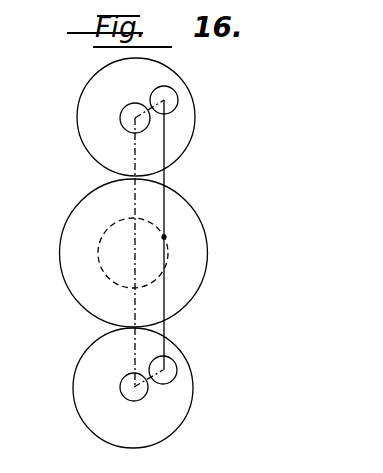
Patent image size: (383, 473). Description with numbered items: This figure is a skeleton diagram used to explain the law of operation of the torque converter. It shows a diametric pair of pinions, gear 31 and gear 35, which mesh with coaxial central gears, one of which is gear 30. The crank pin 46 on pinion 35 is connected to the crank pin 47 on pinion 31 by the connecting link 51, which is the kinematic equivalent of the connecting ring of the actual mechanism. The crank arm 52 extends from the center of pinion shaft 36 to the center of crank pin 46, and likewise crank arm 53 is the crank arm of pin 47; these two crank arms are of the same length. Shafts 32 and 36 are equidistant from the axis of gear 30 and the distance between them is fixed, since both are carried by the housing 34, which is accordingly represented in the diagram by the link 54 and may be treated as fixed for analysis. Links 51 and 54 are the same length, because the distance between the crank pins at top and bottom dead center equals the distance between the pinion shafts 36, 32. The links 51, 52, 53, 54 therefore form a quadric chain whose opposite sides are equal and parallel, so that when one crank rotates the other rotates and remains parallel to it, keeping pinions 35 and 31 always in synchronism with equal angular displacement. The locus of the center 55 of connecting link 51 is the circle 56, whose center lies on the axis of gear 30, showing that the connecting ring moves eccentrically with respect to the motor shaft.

The coaxial gear 30 is at (157, 253).
The housing 34 is at (192, 301).
The gear 31 is at (188, 410).
The shaft 32 is at (120, 387).
The gear 35 is at (188, 148).
The pinion shaft 36 is at (120, 116).
The crank pin 46 is at (178, 104).
The crank pin 47 is at (177, 373).
The connecting link 51 is at (165, 213).
The crank arm 52 is at (150, 103).
The crank arm 53 is at (148, 385).
The link 54 is at (133, 313).
The center of the connecting link 55 is at (165, 237).
The circle 56 is at (99, 250).